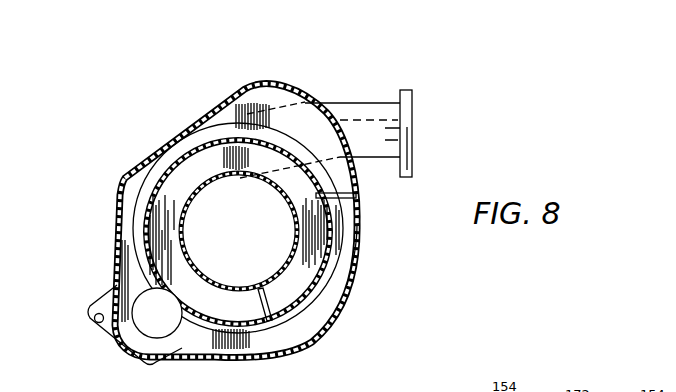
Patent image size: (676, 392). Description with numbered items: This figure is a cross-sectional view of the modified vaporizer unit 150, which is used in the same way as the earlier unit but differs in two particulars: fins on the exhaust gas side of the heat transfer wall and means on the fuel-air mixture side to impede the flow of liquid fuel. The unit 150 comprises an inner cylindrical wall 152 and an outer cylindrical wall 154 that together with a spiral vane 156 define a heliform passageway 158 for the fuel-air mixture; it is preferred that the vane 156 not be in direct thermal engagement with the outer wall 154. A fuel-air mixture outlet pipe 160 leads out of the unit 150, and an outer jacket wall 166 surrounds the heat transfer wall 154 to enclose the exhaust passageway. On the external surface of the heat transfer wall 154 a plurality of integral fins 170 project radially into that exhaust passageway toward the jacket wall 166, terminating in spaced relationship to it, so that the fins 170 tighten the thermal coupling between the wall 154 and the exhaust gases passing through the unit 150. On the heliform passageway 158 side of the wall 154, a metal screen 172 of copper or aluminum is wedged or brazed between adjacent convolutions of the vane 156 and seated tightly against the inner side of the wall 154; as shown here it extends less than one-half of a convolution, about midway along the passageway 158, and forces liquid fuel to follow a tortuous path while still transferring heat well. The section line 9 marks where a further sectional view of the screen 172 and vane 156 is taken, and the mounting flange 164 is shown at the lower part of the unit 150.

The section line 9- 9 is at (337, 215).
The vaporizer unit 150 is at (208, 100).
The inner cylindrical wall 152 is at (193, 256).
The outer cylindrical wall 154 is at (181, 160).
The spiral vane 156 is at (250, 318).
The heliform passageway 158 is at (165, 200).
The fuel-air mixture outlet pipe 160 is at (353, 112).
The mounting flange 164 is at (140, 323).
The outer jacket wall 166 is at (358, 243).
The fins 170 is at (138, 212).
The metal screen 172 is at (323, 308).